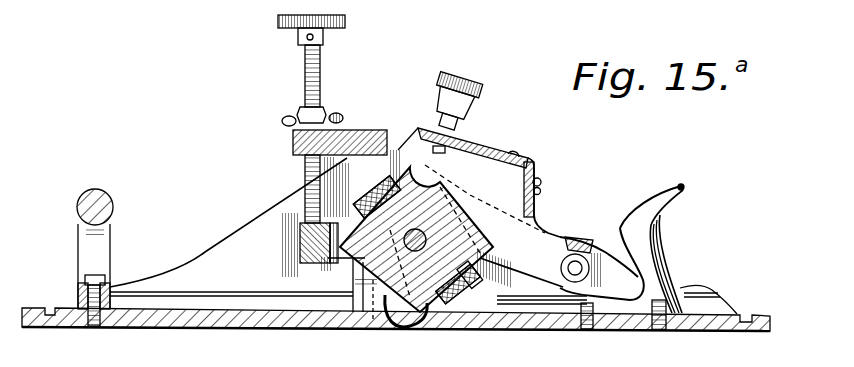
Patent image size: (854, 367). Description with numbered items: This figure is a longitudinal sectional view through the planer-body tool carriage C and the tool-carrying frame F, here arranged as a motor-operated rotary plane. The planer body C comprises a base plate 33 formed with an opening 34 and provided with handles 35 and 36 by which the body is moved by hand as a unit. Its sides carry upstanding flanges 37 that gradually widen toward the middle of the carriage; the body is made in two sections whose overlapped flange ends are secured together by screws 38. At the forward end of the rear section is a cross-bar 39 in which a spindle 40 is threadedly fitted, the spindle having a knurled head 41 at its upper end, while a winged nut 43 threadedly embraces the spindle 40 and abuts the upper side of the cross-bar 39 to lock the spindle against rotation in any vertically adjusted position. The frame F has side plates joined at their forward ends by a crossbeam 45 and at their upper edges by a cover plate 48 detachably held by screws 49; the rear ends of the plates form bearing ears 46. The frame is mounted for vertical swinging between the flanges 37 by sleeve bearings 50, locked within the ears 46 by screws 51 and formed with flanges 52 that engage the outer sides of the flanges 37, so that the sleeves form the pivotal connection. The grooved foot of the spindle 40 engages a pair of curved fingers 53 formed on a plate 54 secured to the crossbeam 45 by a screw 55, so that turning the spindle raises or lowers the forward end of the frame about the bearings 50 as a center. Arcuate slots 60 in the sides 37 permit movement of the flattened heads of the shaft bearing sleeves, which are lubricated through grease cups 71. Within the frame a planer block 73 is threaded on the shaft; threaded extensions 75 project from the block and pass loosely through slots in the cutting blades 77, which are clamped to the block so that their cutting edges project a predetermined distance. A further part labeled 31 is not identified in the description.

The planer-body tool carriage C is at (247, 320).
The lever 31 is at (612, 292).
The base plate 33 is at (633, 326).
The opening 34 is at (500, 325).
The handle 35 is at (667, 254).
The handle 36 is at (116, 213).
The upstanding flanges 37 is at (192, 266).
The screws 38 is at (383, 134).
The cross-bar 39 is at (347, 130).
The spindle 40 is at (323, 84).
The knurled head 41 is at (346, 22).
The winged nut 43 is at (291, 118).
The crossbeam 45 is at (360, 193).
The bearing ears 46 is at (540, 231).
The cover plate 48 is at (500, 149).
The screws 49 is at (519, 150).
The sleeve bearings 50 is at (561, 268).
The screws 51 is at (578, 248).
The flanges 52 is at (300, 255).
The fingers 53 is at (303, 217).
The plate 54 is at (300, 232).
The screw 55 is at (300, 247).
The arcuate slots 60 is at (452, 187).
The grease cups 71 is at (472, 88).
The planer block 73 is at (491, 220).
The threaded extensions 75 is at (425, 327).
The cutting blades 77 is at (425, 130).
The tool-carrying frame F is at (468, 153).